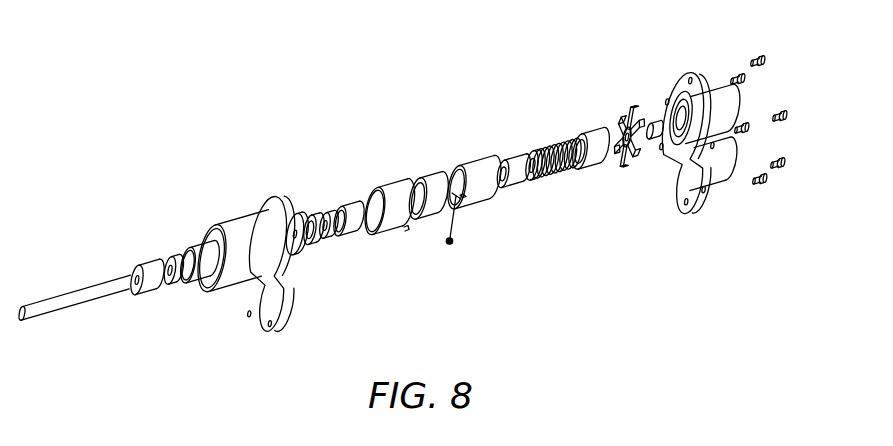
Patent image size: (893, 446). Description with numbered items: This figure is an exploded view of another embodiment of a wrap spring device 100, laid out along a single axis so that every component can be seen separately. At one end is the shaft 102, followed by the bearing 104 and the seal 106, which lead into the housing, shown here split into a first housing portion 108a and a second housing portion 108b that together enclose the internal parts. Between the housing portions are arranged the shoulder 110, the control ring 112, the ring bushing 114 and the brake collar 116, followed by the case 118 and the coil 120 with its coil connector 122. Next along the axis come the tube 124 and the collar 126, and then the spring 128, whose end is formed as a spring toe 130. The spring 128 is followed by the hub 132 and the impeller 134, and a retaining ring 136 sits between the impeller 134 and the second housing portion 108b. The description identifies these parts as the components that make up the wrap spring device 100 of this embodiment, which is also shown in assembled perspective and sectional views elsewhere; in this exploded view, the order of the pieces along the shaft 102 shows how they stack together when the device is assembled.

The wrap spring device 100 is at (774, 137).
The shaft 102 is at (95, 293).
The bearing 104 is at (143, 270).
The seal 106 is at (177, 255).
The housing 108a is at (238, 235).
The housing 108b is at (715, 100).
The shoulder 110 is at (290, 218).
The control ring 112 is at (323, 243).
The ring bushing 114 is at (342, 235).
The brake collar 116 is at (357, 213).
The case 118 is at (408, 218).
The coil 120 is at (440, 170).
The coil connector 122 is at (460, 225).
The tube 124 is at (477, 173).
The collar 126 is at (507, 163).
The spring 128 is at (558, 140).
The spring toe 130 is at (535, 150).
The hub 132 is at (592, 133).
The impeller 134 is at (635, 165).
The retaining ring 136 is at (653, 123).